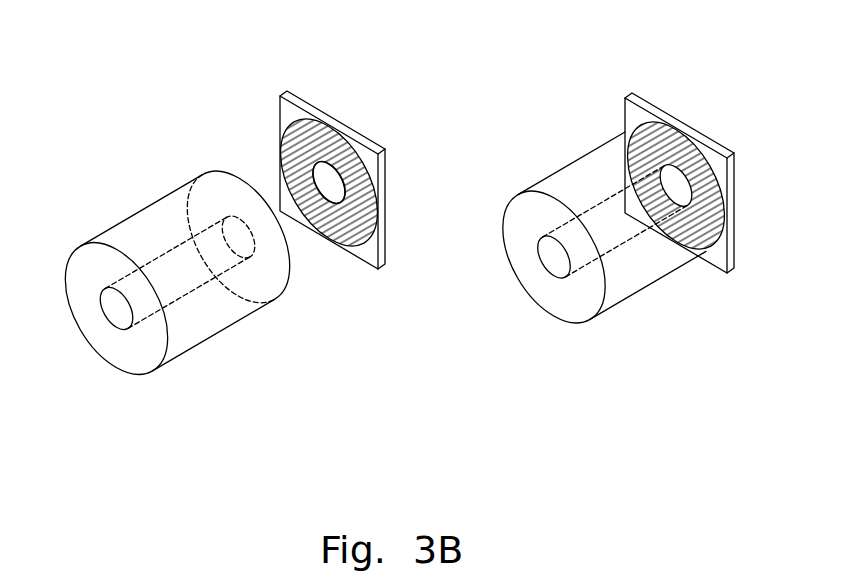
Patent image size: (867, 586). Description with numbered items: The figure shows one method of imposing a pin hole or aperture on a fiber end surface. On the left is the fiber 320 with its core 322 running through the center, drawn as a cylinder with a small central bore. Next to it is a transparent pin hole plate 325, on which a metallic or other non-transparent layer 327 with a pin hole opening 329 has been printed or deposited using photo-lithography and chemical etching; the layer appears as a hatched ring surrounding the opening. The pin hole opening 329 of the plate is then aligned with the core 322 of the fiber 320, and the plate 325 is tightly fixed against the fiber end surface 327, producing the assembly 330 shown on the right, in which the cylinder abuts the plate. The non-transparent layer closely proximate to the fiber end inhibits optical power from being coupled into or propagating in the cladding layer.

The fiber 320 is at (145, 195).
The core 322 is at (248, 257).
The pin hole plate 325 is at (310, 95).
The non-transparent layer 327 is at (224, 161).
The pin hole opening 329 is at (343, 202).
The assembly 330 is at (592, 125).